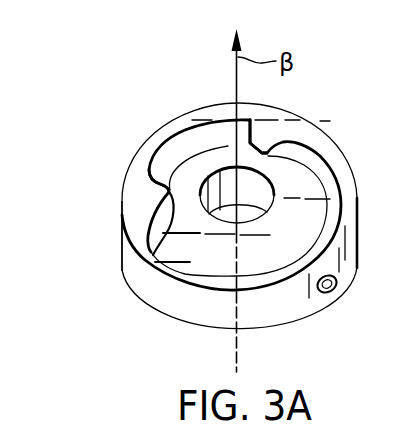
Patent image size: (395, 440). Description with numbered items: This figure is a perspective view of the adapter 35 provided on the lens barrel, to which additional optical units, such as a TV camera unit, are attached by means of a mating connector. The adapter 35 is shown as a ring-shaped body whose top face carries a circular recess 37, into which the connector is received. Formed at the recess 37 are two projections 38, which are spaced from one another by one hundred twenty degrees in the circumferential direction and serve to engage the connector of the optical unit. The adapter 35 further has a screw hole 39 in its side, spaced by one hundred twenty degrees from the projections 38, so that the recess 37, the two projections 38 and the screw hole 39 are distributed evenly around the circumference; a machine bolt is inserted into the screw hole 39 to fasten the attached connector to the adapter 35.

The adapter 35 is at (110, 238).
The circular recess 37 is at (193, 248).
The projections 38 is at (262, 137).
The screw hole 39 is at (328, 290).